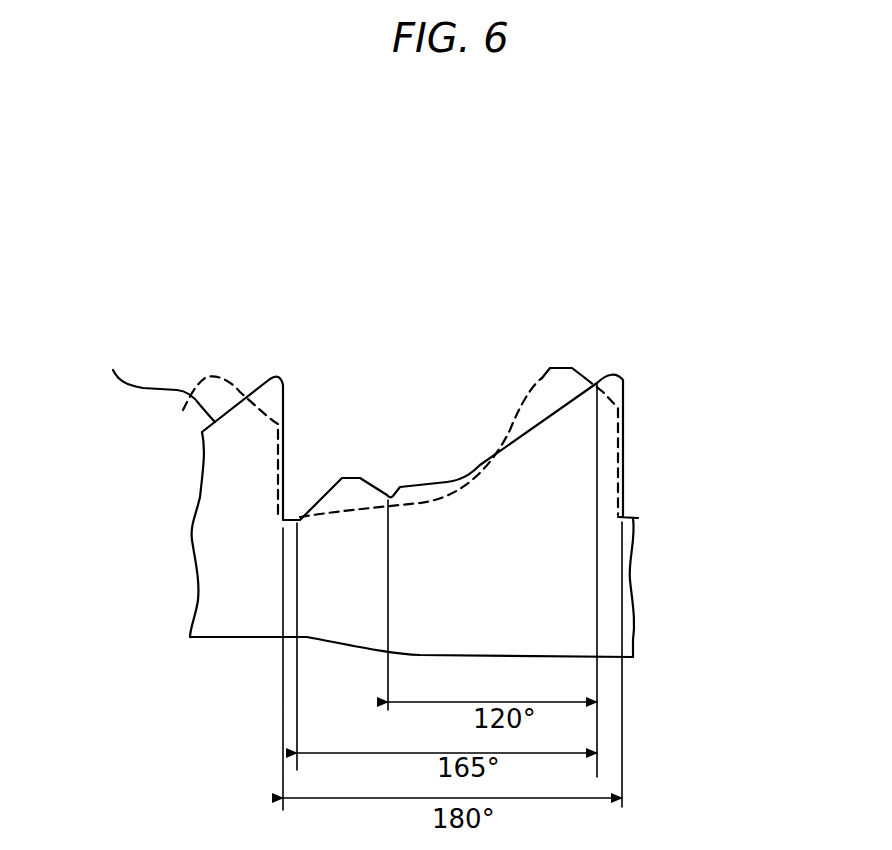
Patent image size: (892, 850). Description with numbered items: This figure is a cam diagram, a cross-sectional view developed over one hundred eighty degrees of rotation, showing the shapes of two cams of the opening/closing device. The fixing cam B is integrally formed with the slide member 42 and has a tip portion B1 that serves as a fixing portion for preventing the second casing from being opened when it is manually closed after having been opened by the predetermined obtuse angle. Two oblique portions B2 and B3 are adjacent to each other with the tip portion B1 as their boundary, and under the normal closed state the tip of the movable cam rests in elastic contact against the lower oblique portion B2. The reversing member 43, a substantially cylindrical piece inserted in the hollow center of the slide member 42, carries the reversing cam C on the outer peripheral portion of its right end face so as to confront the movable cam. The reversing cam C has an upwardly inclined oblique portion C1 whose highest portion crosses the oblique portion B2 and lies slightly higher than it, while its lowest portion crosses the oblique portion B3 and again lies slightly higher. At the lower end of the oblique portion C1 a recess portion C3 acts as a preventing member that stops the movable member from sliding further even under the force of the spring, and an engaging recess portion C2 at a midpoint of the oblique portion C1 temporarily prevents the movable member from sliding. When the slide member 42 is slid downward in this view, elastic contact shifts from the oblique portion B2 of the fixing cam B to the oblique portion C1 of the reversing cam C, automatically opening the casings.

The fixing cam B is at (548, 358).
The tip portion B1 is at (555, 365).
The oblique portion B2 is at (585, 378).
The oblique portion B3 is at (350, 508).
The reversing cam C is at (637, 388).
The oblique portion C1 is at (546, 423).
The engaging recess portion C2 is at (389, 490).
The recess portion C3 is at (294, 514).
The slide member 42 is at (207, 375).
The reversing member 43 is at (101, 346).